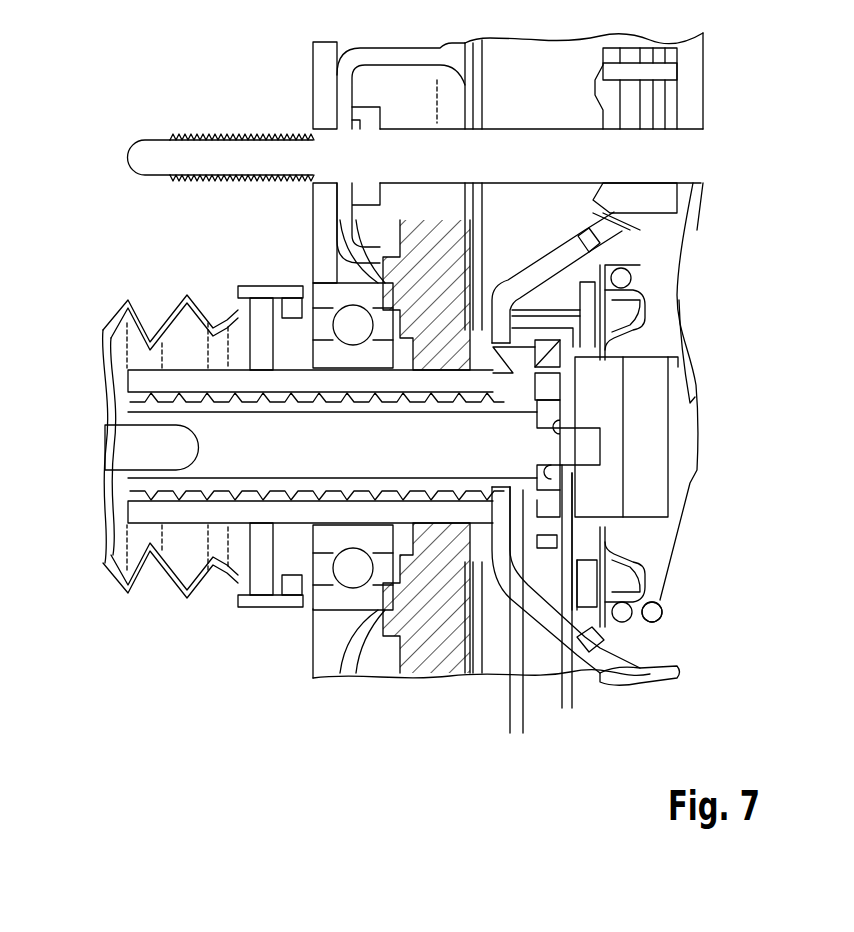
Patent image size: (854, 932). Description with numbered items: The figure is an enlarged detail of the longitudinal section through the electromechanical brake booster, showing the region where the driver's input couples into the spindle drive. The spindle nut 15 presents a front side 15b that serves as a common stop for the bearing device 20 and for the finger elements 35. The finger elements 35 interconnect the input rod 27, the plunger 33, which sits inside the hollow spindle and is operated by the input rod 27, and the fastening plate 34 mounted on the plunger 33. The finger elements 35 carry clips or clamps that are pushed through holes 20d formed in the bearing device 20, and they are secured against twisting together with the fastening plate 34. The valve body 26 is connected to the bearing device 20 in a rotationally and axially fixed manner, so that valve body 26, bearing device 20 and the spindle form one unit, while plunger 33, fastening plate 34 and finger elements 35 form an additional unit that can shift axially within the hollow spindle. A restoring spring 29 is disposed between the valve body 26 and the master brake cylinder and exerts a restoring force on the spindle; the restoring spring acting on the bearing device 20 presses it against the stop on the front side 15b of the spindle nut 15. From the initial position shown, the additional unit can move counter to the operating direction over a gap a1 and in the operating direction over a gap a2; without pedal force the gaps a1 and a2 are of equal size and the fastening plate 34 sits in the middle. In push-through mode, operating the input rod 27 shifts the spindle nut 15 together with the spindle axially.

The spindle nut 15 is at (303, 513).
The front side of spindle nut 15b is at (492, 555).
The bearing device 20 is at (538, 288).
The holes in bearing device 20d is at (515, 567).
The valve body 26 is at (583, 323).
The input rod 27 is at (128, 444).
The restoring spring 29 is at (650, 612).
The plunger 33 is at (218, 462).
The fastening plate 34 is at (545, 388).
The finger elements 35 is at (545, 365).
The gap a1 is at (543, 733).
The gap a2 is at (595, 708).